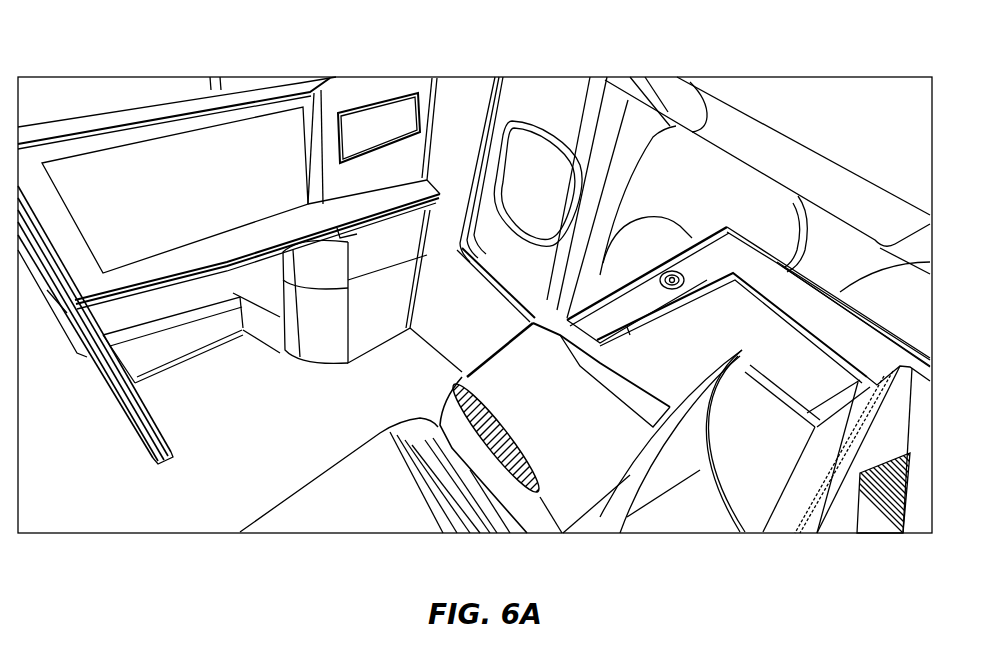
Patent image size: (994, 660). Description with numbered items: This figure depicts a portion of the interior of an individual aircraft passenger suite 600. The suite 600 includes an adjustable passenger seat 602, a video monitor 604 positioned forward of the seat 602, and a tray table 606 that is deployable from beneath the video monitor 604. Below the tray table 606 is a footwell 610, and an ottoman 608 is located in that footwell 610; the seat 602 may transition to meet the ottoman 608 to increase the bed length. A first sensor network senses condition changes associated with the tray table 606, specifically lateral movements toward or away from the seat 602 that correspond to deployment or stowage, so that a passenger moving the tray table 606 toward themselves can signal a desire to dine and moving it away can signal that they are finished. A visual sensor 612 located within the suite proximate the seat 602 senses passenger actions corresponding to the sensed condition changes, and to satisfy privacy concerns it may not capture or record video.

The aircraft passenger suite 600 is at (197, 65).
The adjustable passenger seat 602 is at (300, 518).
The video monitor 604 is at (292, 122).
The tray table 606 is at (197, 287).
The ottoman 608 is at (140, 352).
The footwell 610 is at (180, 385).
The visual sensor 612 is at (673, 270).